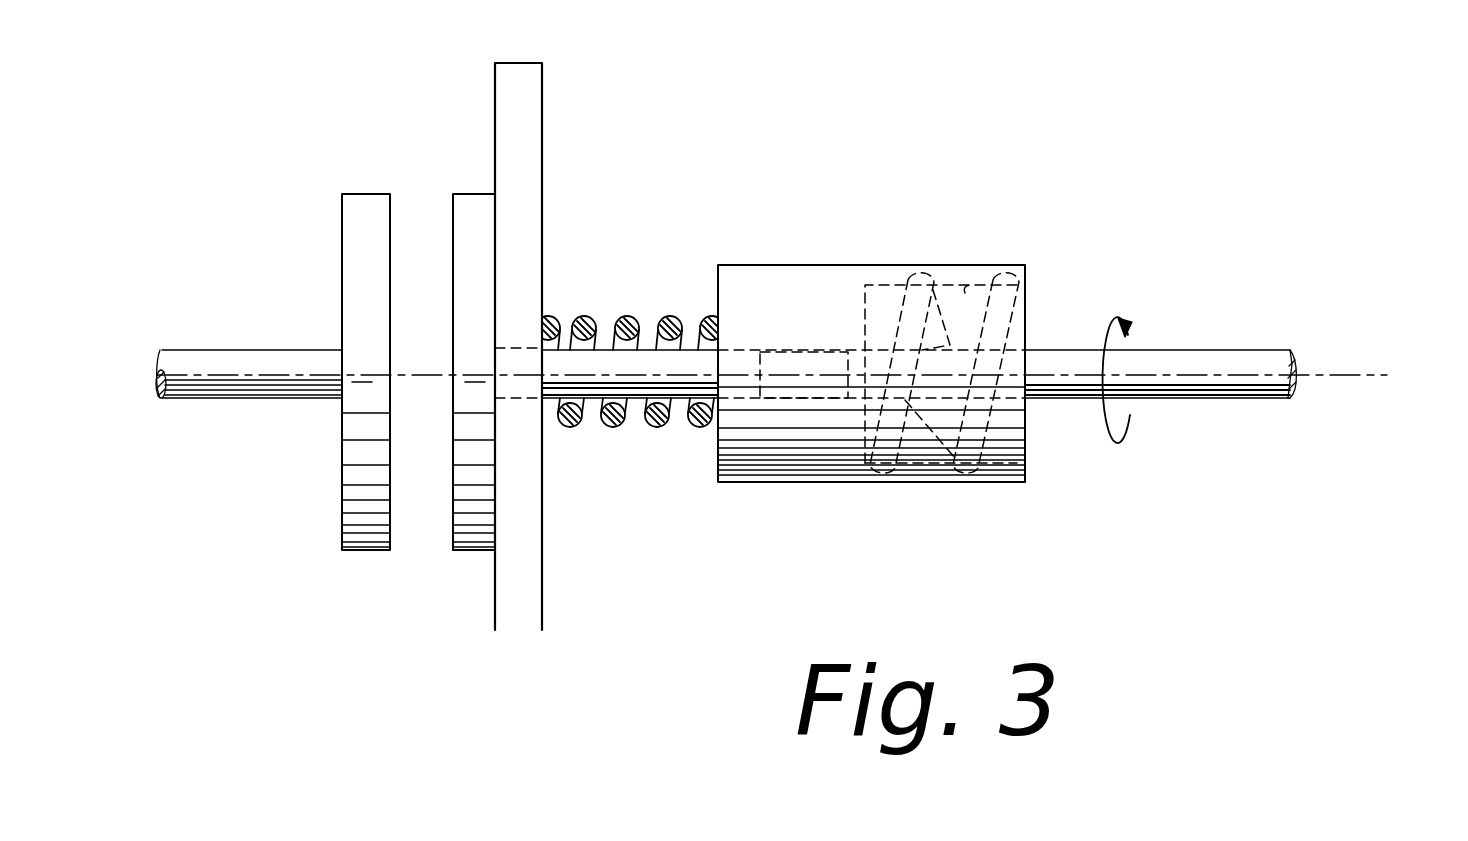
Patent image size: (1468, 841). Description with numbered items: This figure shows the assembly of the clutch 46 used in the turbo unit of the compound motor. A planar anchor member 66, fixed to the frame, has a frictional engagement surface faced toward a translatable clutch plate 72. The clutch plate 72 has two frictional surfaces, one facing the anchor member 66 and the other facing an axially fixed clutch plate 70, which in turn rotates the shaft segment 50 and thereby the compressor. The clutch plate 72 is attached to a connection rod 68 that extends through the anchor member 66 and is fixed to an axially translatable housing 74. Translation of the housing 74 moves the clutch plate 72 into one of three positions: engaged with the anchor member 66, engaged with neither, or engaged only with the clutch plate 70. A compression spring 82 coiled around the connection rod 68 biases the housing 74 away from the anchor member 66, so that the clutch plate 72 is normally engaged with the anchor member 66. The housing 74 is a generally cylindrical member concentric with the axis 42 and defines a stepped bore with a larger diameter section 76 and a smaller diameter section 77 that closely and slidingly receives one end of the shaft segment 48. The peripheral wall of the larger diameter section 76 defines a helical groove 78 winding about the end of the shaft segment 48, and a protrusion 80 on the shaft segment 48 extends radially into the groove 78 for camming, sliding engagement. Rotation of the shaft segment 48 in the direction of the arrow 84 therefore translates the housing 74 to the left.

The axis 42 is at (1360, 375).
The clutch 46 is at (849, 233).
The shaft segment 48 is at (1215, 386).
The shaft segment 50 is at (165, 355).
The anchor member 66 is at (528, 73).
The connection rod 68 is at (636, 365).
The clutch plate 70 is at (354, 213).
The clutch plate 72 is at (465, 225).
The housing 74 is at (746, 273).
The larger diameter section 76 is at (970, 292).
The smaller diameter section 77 is at (785, 398).
The helical groove 78 is at (907, 302).
The protrusion 80 is at (900, 367).
The compression spring 82 is at (656, 426).
The arrow 84 is at (1126, 330).